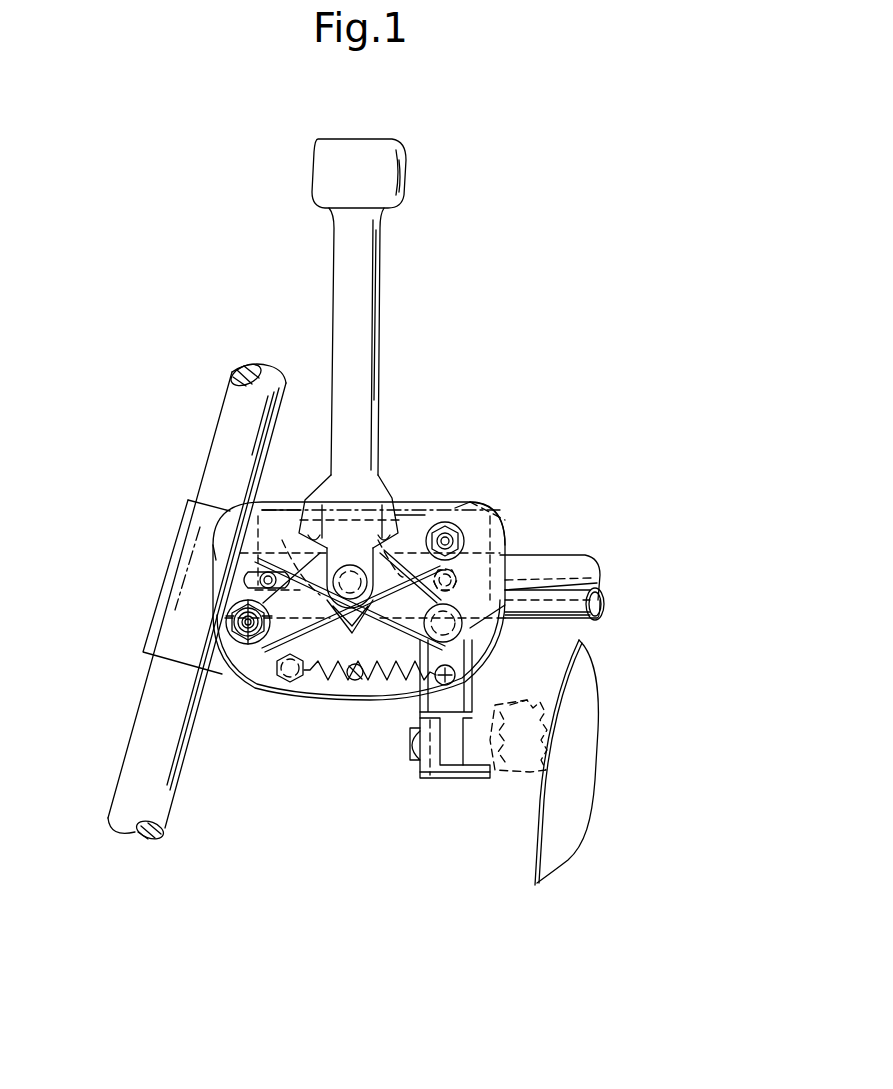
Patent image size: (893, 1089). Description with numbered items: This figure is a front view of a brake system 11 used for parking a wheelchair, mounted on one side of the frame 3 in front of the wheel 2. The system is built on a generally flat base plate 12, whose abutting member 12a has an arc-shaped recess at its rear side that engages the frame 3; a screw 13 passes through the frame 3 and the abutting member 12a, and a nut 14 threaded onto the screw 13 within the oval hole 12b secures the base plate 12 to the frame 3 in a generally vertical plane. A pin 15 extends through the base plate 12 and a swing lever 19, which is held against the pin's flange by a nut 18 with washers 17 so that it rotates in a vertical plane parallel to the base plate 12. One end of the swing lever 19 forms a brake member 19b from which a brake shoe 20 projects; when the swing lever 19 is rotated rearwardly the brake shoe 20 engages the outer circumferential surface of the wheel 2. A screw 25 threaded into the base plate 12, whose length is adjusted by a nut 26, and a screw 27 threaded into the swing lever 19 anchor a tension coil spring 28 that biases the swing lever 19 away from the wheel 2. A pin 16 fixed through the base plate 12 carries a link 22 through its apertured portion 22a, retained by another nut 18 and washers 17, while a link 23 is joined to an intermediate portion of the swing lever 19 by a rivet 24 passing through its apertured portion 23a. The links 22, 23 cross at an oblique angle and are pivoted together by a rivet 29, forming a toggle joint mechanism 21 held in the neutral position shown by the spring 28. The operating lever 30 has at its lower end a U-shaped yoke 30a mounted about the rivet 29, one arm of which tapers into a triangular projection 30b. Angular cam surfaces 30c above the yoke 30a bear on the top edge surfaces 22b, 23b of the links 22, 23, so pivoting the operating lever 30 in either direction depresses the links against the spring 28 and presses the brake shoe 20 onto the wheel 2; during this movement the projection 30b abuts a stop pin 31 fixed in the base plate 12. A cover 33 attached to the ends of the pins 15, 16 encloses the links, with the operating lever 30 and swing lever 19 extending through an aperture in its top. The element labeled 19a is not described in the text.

The wheel 2 is at (562, 863).
The frame 3 is at (590, 555).
The brake system 11 is at (500, 351).
The base plate 12 is at (495, 530).
The abutting member 12a is at (507, 543).
The oval hole 12b is at (212, 538).
The screw 13 is at (258, 580).
The nut 14 is at (238, 535).
The pin 15 is at (487, 528).
The pin 16 is at (243, 648).
The washer 17 is at (236, 630).
The nut 18 is at (230, 618).
The swing lever 19 is at (418, 740).
The holder upper portion 19a is at (476, 503).
The brake member 19b is at (439, 779).
The brake shoe 20 is at (480, 778).
The toggle joint mechanism 21 is at (352, 681).
The link 22 is at (315, 660).
The apertured portion 22a is at (246, 652).
The top edge surface 22b is at (410, 520).
The link 23 is at (400, 690).
The apertured portion 23a is at (505, 605).
The top edge surface 23b is at (292, 515).
The rivet 24 is at (510, 704).
The screw 25 is at (291, 685).
The nut 26 is at (255, 640).
The screw 27 is at (458, 680).
The tension coil spring 28 is at (436, 682).
The rivet 29 is at (351, 564).
The operating lever 30 is at (383, 251).
The U-shaped yoke 30a is at (268, 523).
The triangular projection 30b is at (328, 695).
The angular cam surface 30c is at (302, 517).
The stop pin 31 is at (356, 664).
The cover 33 is at (200, 527).